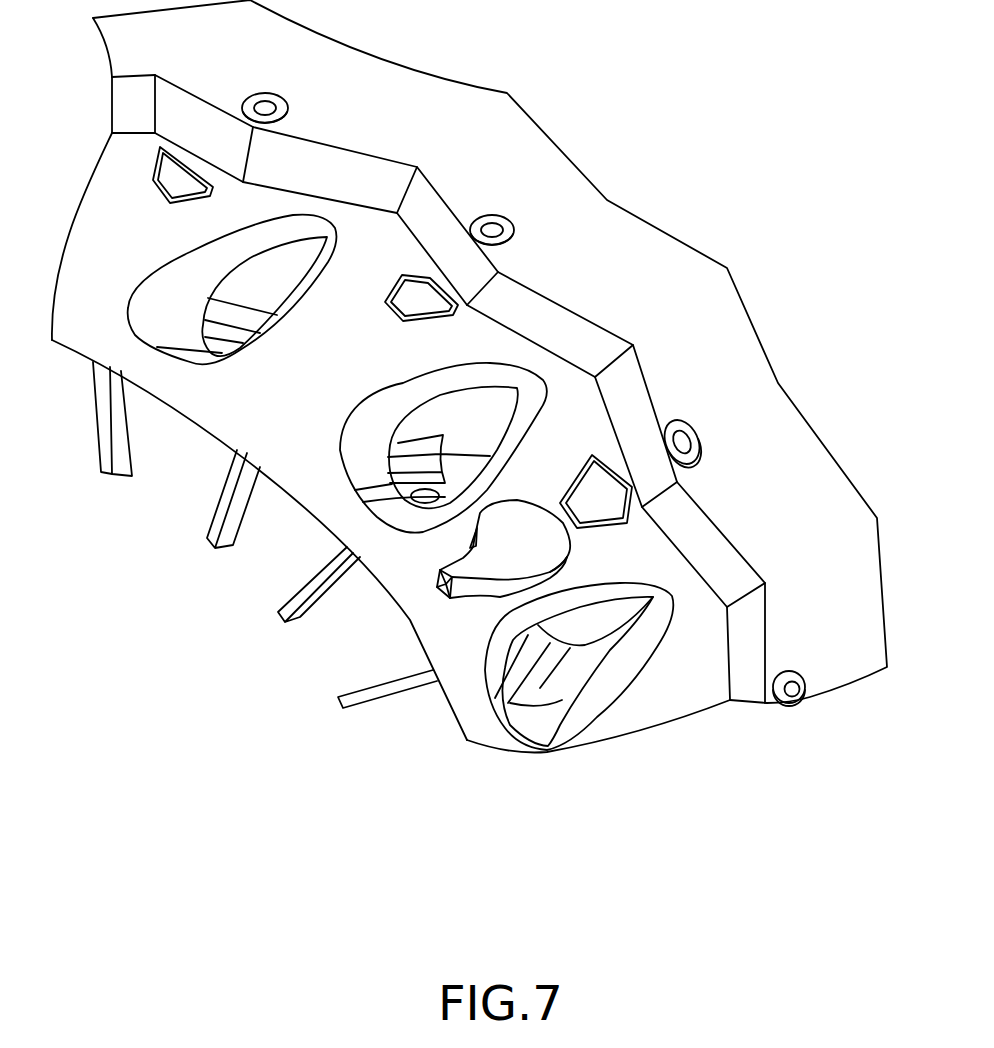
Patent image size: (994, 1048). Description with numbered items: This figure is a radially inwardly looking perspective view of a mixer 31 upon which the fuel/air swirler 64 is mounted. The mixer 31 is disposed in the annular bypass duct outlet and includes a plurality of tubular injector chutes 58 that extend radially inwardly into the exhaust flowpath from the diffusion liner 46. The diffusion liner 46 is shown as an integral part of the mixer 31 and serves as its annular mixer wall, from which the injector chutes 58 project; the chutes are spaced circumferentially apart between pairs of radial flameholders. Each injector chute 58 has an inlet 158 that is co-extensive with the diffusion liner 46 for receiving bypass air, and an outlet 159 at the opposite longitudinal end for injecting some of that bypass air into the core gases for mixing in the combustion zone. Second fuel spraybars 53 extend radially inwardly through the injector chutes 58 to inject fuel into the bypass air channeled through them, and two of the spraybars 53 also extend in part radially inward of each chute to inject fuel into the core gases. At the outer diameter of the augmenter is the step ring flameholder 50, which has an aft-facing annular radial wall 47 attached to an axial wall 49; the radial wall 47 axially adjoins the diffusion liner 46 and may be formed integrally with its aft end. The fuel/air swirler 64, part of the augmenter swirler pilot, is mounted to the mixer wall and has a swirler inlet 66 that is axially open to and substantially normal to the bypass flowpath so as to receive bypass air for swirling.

The mixer 31 is at (658, 727).
The diffusion liner 46 is at (466, 742).
The aft-facing annular radial wall 47 is at (520, 310).
The axial wall 49 is at (848, 673).
The step ring flameholder 50 is at (647, 218).
The second fuel spraybars 53 is at (293, 594).
The injector chutes 58 is at (375, 448).
The fuel/air swirler 64 is at (531, 503).
The swirler inlet 66 is at (437, 583).
The inlet 158 is at (153, 326).
The outlet 159 is at (441, 454).